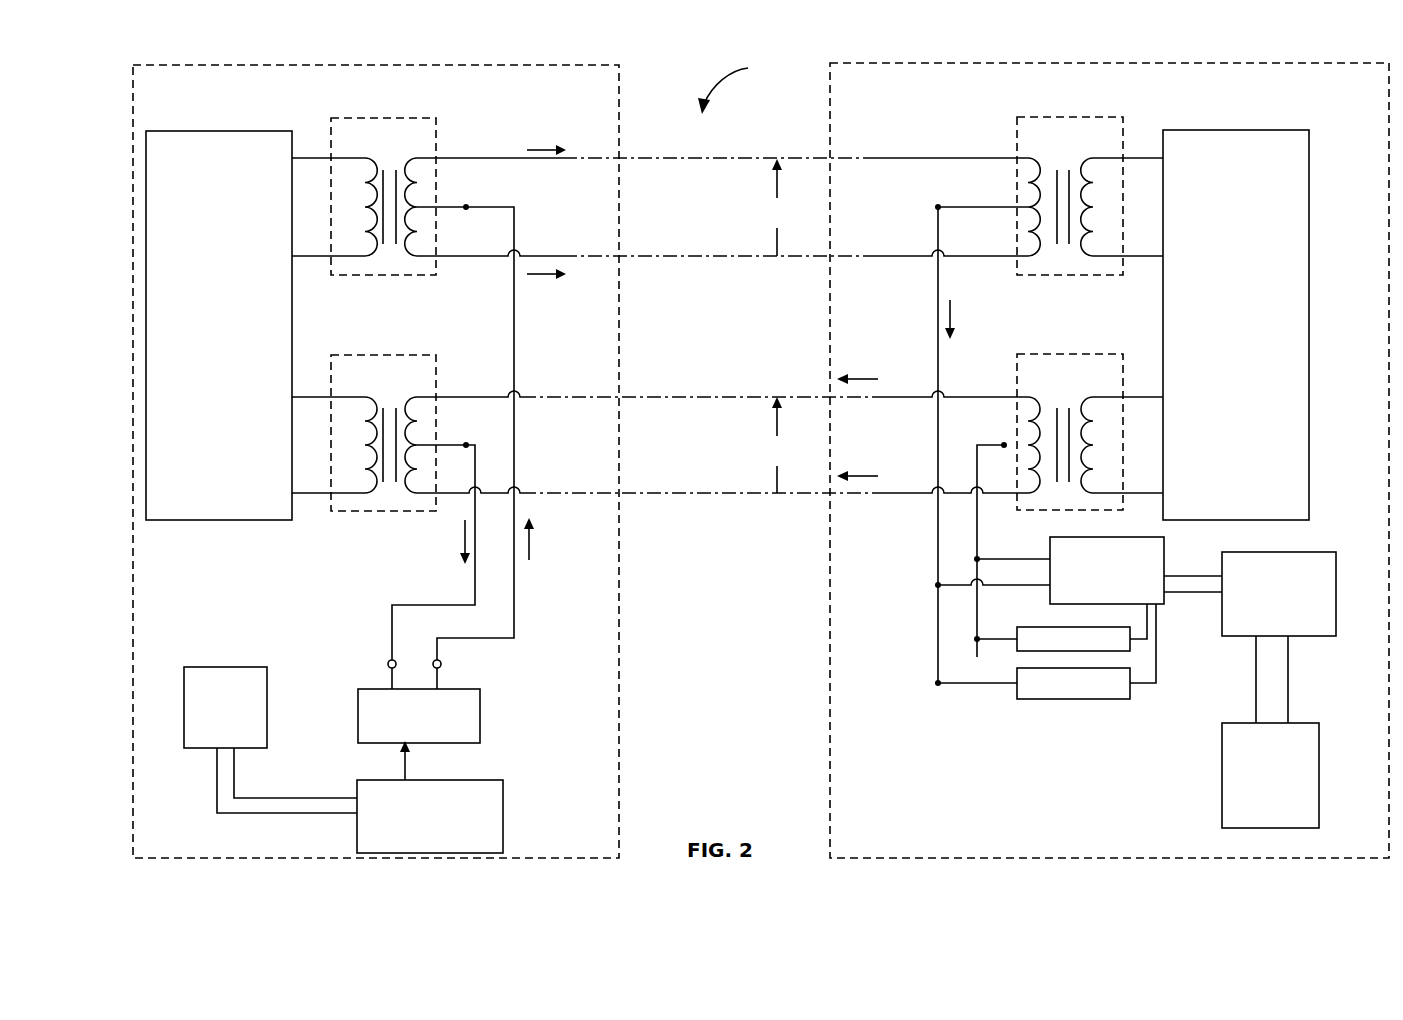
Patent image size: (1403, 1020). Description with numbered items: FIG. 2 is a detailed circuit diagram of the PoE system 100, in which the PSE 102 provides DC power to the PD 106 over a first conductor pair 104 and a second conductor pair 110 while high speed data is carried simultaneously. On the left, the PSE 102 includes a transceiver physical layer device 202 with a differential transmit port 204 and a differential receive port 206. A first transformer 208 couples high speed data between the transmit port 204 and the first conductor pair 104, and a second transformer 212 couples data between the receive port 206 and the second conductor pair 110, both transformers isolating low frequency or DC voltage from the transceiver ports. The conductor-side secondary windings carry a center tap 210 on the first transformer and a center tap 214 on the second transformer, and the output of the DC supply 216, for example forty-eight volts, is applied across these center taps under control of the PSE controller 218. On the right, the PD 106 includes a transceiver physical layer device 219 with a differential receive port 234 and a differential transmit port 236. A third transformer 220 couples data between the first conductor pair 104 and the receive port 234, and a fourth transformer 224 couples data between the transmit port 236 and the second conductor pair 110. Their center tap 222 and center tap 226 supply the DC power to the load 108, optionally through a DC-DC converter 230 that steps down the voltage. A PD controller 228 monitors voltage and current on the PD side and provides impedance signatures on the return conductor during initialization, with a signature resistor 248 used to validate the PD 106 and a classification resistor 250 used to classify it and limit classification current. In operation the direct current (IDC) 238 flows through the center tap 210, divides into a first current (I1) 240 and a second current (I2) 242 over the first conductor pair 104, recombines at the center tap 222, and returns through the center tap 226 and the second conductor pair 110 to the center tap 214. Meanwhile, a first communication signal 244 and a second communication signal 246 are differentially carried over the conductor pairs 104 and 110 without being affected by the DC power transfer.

The PoE system 100 is at (745, 82).
The PSE 102 is at (355, 65).
The first conductor pair 104 is at (685, 228).
The PD 106 is at (1095, 63).
The load 108 is at (1319, 763).
The second conductor pair 110 is at (685, 463).
The transceiver physical layer device 202 is at (219, 325).
The differential transmit port 204 is at (292, 204).
The differential receive port 206 is at (292, 426).
The first transformer 208 is at (383, 196).
The center tap 210 is at (467, 207).
The second transformer 212 is at (451, 433).
The center tap 214 is at (466, 445).
The DC supply 216 is at (358, 713).
The PSE controller 218 is at (357, 780).
The transceiver physical layer device 219 is at (1236, 325).
The third transformer 220 is at (1090, 196).
The center tap 222 is at (936, 207).
The fourth transformer 224 is at (998, 430).
The center tap 226 is at (1004, 445).
The PD controller 228 is at (1164, 564).
The DC-DC converter 230 is at (1296, 642).
The differential receive port 234 is at (1163, 203).
The differential transmit port 236 is at (1163, 430).
The direct current (IDC) 238 is at (496, 541).
The first current (I1) 240 is at (530, 127).
The second current (I2) 242 is at (556, 312).
The first communication signal 244 is at (777, 207).
The second communication signal 246 is at (777, 445).
The signature resistor 248 is at (247, 667).
The classification resistor 250 is at (1103, 699).